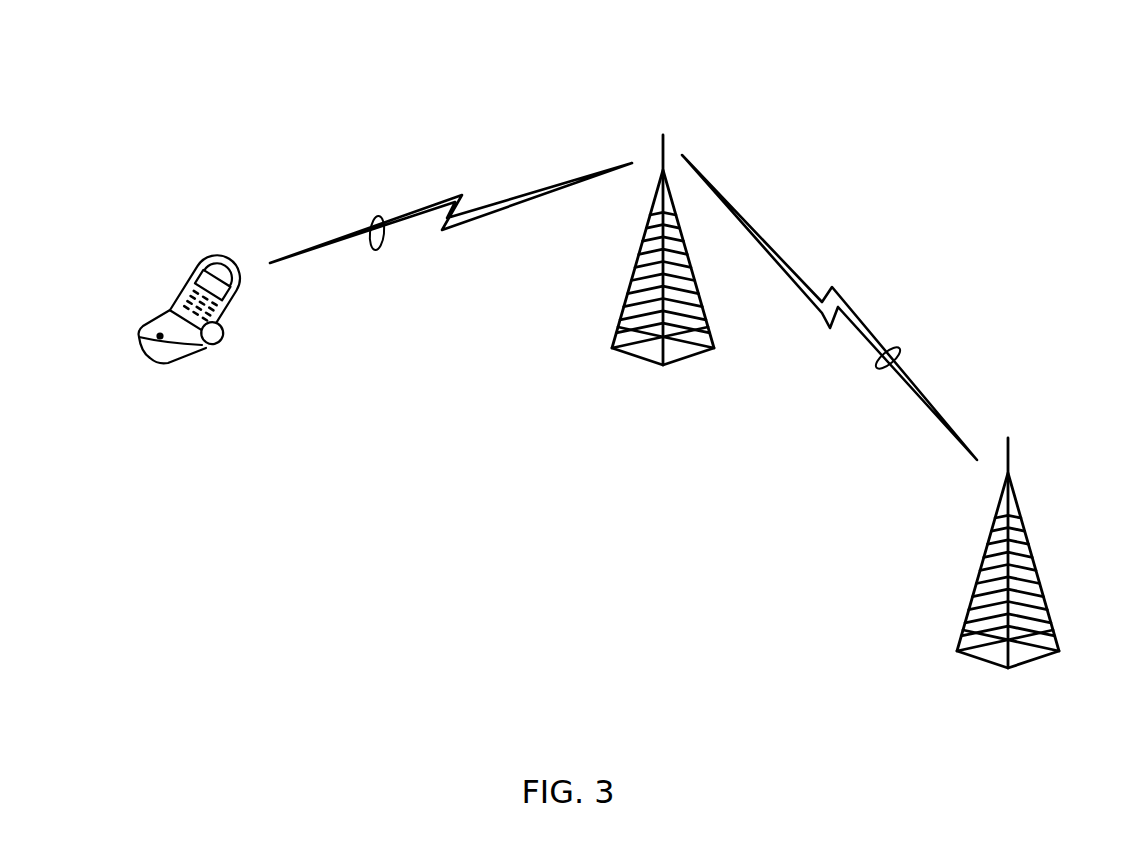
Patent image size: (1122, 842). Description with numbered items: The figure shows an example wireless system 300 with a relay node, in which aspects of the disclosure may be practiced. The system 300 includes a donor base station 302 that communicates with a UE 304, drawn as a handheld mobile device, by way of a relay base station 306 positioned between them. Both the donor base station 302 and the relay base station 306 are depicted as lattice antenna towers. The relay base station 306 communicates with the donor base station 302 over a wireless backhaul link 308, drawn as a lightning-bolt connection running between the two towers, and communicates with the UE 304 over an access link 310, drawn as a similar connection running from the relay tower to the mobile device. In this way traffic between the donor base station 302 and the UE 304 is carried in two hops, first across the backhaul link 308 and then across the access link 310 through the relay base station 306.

The wireless system 300 is at (235, 89).
The donor base station 302 is at (1040, 568).
The UE 304 is at (193, 276).
The relay base station 306 is at (637, 263).
The wireless backhaul link 308 is at (877, 367).
The access link 310 is at (375, 250).